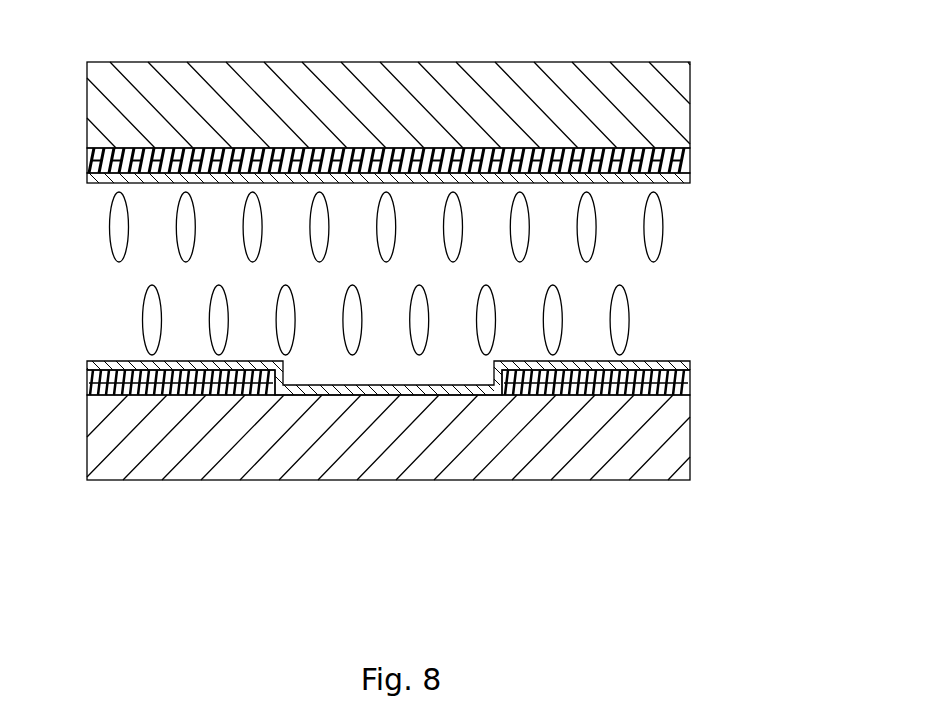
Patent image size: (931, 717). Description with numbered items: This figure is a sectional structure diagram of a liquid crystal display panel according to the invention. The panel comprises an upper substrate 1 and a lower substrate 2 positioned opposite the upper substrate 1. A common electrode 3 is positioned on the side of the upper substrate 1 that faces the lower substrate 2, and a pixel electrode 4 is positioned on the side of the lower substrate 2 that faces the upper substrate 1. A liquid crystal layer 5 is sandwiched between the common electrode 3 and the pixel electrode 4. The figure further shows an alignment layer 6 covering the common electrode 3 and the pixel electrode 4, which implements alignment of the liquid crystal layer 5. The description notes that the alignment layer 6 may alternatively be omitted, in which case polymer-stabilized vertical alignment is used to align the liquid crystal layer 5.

The upper substrate 1 is at (665, 117).
The lower substrate 2 is at (608, 447).
The common electrode 3 is at (663, 164).
The pixel electrode 4 is at (643, 383).
The liquid crystal layer 5 is at (585, 230).
The alignment layer 6 is at (127, 367).